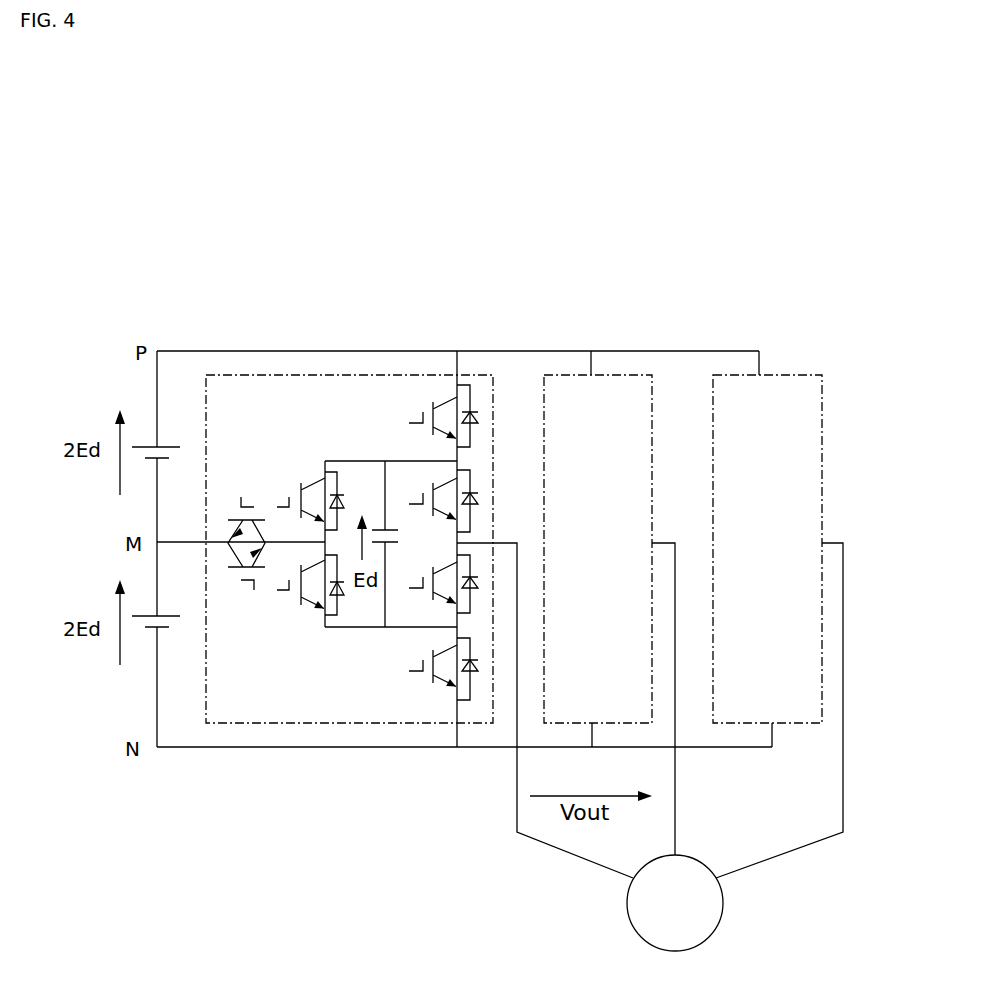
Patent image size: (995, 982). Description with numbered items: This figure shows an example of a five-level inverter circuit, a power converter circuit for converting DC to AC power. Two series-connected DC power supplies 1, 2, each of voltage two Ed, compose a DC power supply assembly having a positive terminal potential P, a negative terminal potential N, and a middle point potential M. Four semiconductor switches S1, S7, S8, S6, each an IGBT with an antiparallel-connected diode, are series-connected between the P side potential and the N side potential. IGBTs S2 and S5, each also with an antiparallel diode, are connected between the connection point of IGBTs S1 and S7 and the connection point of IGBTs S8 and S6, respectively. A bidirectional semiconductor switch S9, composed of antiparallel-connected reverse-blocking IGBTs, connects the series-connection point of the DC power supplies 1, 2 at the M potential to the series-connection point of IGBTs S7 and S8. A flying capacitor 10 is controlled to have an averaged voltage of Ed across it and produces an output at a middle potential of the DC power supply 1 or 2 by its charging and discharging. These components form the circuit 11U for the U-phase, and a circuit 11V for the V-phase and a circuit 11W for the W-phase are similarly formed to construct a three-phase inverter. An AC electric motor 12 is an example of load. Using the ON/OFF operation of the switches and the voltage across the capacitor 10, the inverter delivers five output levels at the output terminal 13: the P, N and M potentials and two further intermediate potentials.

The DC power supply 1 is at (157, 437).
The DC power supply 2 is at (157, 607).
The flying capacitor 10 is at (398, 542).
The U-phase circuit 11U is at (349, 510).
The V-phase circuit 11V is at (609, 517).
The W-phase circuit 11W is at (782, 515).
The AC electric motor 12 is at (713, 903).
The output terminal 13 is at (545, 710).
The semiconductor switch S1 is at (443, 411).
The IGBT S2 is at (443, 498).
The IGBT S5 is at (442, 591).
The semiconductor switch S6 is at (443, 679).
The semiconductor switch S7 is at (310, 490).
The semiconductor switch S8 is at (310, 594).
The bidirectional semiconductor switch S9 is at (242, 529).